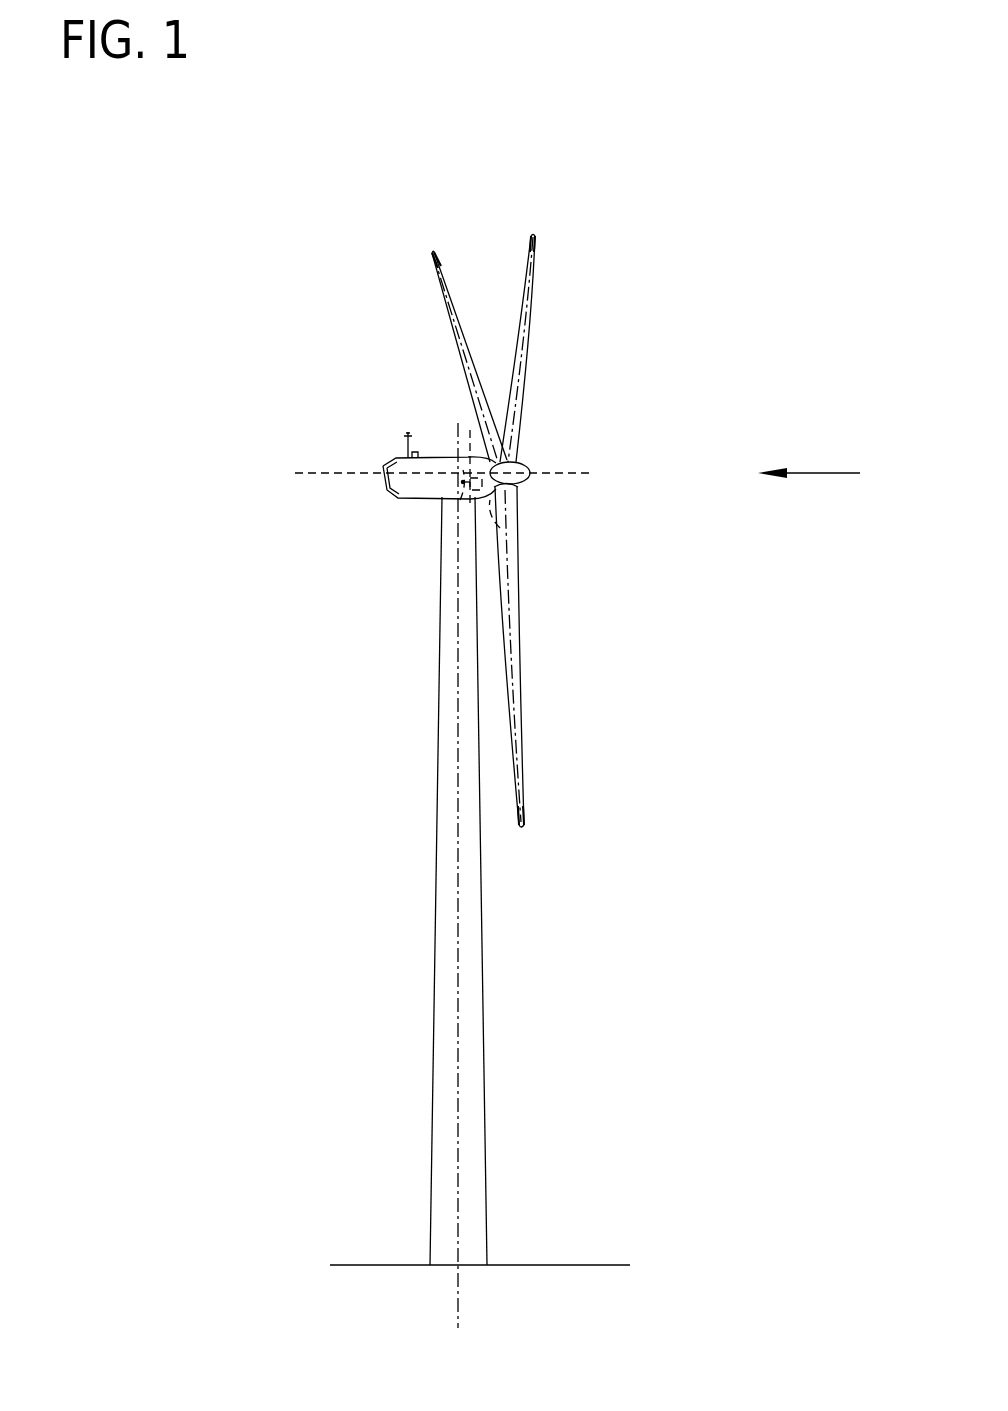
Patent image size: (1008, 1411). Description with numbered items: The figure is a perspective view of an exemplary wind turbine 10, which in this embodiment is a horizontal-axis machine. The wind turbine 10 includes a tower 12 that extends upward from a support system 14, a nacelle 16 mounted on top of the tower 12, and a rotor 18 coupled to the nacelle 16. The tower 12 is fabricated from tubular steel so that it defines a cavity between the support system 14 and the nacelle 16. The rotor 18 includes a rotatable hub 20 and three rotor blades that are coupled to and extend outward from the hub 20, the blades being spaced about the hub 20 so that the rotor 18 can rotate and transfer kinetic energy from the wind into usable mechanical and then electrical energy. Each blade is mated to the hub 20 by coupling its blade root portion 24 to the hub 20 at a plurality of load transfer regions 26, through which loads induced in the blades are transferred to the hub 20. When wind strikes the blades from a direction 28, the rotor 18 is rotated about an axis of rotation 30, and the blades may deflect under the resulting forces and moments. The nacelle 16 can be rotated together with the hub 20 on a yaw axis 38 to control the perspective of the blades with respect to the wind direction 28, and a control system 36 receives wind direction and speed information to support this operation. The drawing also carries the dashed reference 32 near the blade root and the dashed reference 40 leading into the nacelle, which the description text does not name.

The wind turbine 10 is at (212, 250).
The tower 12 is at (433, 1040).
The support system 14 is at (388, 1264).
The nacelle 16 is at (413, 497).
The rotor 18 is at (548, 372).
The rotatable hub 20 is at (523, 466).
The blade root portion 24 is at (514, 582).
The load transfer region 26 is at (513, 491).
The direction 28 is at (834, 473).
The axis of rotation 30 is at (590, 473).
The pitch adjustment system 32 is at (500, 528).
The control system 36 is at (460, 500).
The yaw axis 38 is at (458, 922).
The yaw drive mechanism 40 is at (470, 430).